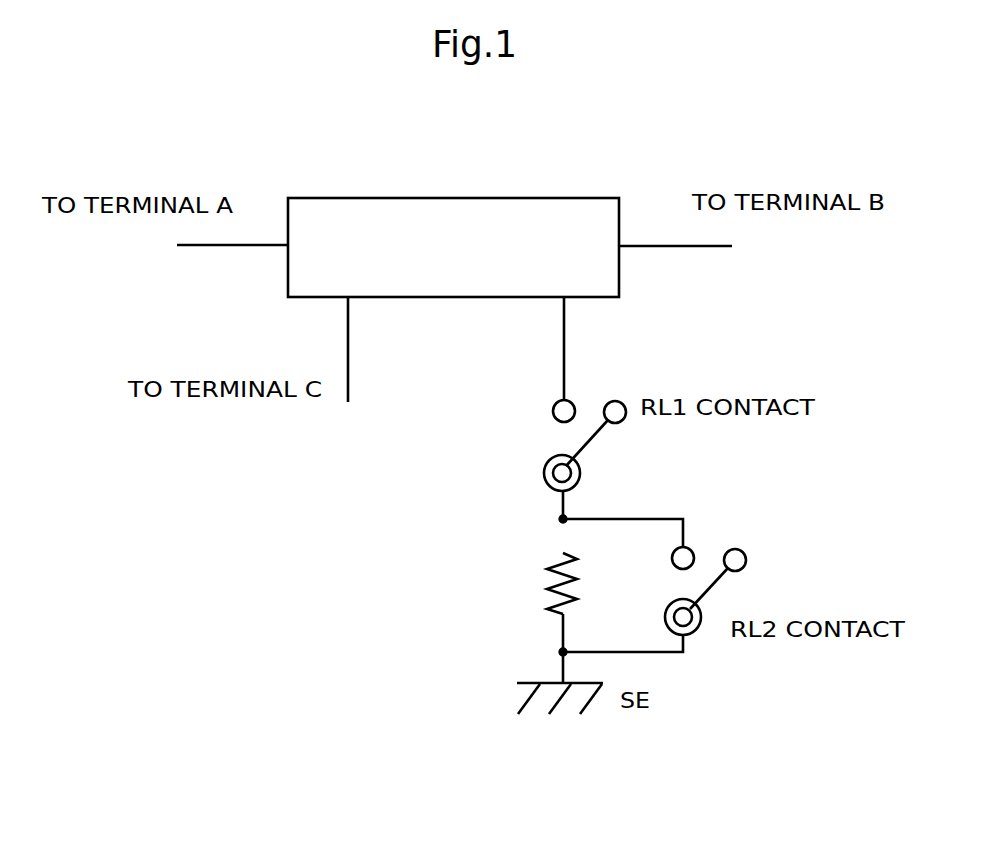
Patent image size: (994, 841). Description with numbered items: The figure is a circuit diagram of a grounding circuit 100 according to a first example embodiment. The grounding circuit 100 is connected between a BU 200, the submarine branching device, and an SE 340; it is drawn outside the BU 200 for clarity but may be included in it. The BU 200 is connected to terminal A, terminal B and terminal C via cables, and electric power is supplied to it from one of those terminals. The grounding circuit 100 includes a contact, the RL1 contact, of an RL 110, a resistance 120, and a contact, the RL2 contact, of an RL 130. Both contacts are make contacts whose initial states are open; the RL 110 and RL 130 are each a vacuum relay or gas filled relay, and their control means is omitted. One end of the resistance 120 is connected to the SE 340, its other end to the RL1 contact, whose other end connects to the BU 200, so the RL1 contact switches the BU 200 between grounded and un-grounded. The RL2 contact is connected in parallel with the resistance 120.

The grounding circuit 100 is at (770, 491).
The RL 110 is at (545, 440).
The resistance 120 is at (532, 583).
The RL 130 is at (718, 593).
The BU 200 is at (472, 197).
The SE 340 is at (505, 700).